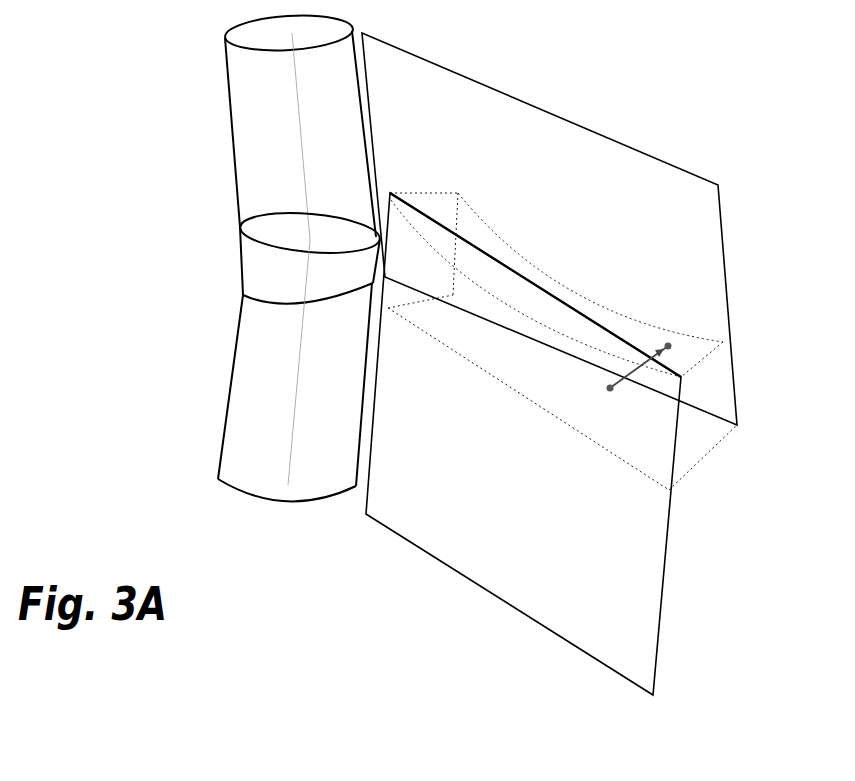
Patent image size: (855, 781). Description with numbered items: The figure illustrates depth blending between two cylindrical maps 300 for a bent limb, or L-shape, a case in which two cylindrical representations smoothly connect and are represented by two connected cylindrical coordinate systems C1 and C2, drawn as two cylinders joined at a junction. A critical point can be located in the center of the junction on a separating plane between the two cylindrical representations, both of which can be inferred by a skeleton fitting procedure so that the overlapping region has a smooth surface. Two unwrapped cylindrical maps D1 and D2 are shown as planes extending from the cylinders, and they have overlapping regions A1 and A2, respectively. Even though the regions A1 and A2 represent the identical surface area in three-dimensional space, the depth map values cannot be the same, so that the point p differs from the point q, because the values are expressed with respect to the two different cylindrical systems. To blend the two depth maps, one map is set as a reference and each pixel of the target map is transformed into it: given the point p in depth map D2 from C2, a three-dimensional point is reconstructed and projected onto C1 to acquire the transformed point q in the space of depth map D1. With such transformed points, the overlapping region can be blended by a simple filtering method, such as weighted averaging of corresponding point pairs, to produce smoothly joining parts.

The two cylindrical maps 300 is at (185, 53).
The first cylindrical coordinate system C1 is at (300, 126).
The second cylindrical coordinate system C2 is at (299, 354).
The first unwrapped cylindrical map D1 is at (549, 229).
The second unwrapped cylindrical map D2 is at (523, 444).
The overlapping region of first map A1 is at (559, 303).
The overlapping region of second map A2 is at (562, 392).
The point in target depth map p is at (632, 369).
The transformed point q is at (660, 341).